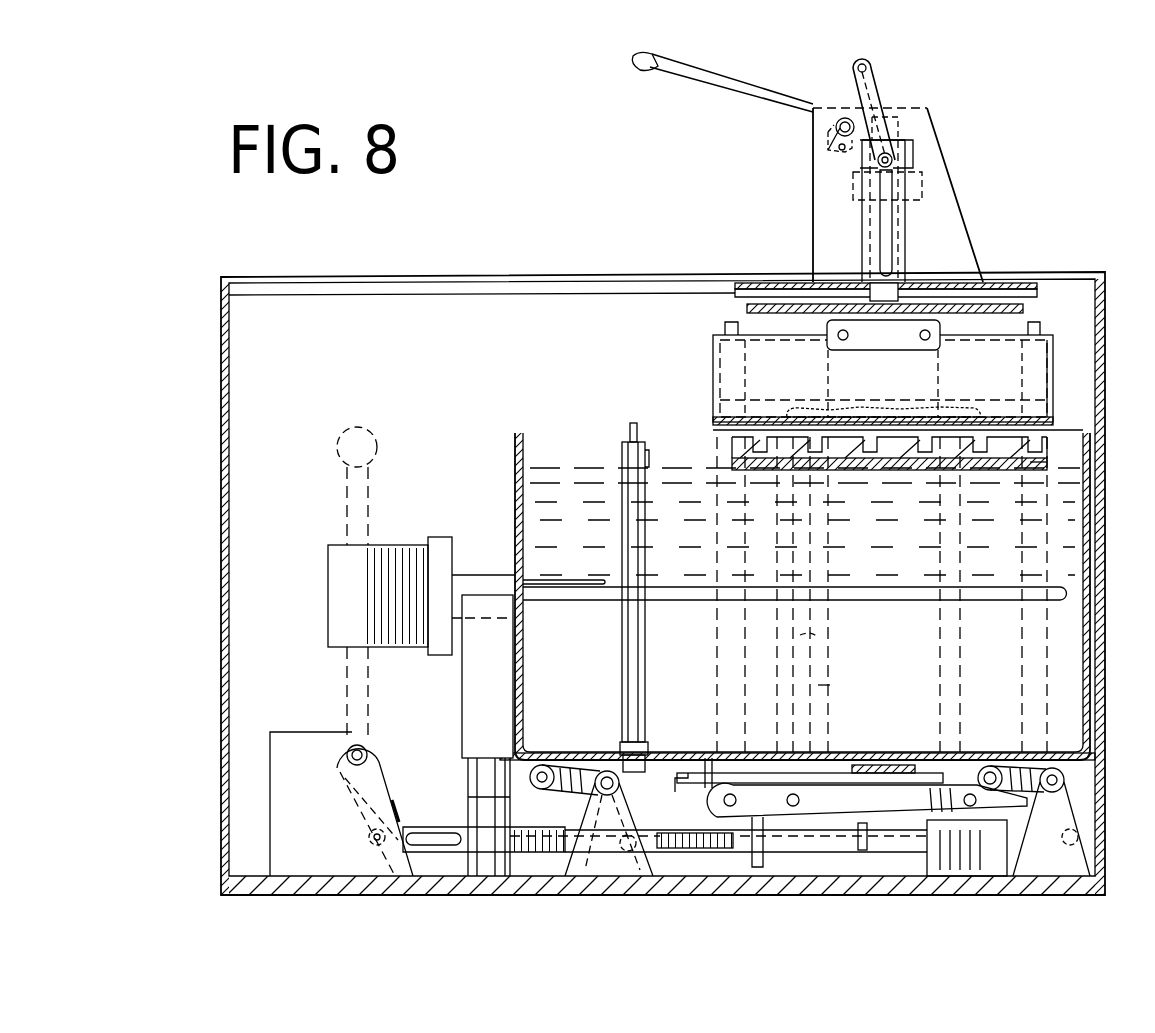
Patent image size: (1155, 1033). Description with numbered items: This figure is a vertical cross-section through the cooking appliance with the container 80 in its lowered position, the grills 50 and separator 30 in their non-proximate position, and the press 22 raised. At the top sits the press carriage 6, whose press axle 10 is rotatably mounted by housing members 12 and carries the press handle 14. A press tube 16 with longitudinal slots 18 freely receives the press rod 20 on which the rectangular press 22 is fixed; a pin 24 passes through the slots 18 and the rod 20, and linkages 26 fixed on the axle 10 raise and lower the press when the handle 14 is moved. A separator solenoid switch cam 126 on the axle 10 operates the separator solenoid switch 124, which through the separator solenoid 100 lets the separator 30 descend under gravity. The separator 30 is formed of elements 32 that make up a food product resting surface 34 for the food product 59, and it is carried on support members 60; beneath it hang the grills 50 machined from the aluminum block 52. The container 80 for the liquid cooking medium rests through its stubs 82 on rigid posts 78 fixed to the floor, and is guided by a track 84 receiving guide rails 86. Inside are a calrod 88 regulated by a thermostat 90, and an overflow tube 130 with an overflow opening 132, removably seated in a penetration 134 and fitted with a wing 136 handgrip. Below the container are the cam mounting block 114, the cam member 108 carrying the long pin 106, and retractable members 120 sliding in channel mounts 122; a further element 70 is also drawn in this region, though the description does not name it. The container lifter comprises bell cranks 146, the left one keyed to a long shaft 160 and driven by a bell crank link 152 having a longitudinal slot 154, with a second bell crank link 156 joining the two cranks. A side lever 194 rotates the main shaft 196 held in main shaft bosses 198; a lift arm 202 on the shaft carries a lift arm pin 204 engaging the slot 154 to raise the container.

The press carriage 6 is at (1092, 201).
The press axle 10 is at (838, 118).
The housing members 12 is at (936, 271).
The press handle 14 is at (746, 88).
The press tube 16 is at (904, 243).
The longitudinal slots 18 is at (880, 250).
The press rod 20 is at (893, 125).
The press 22 is at (1020, 308).
The pin 24 is at (893, 162).
The linkages 26 is at (882, 78).
The separator 30 is at (700, 348).
The elements 32 is at (1010, 415).
The food product resting surface 34 is at (718, 418).
The heat conductive grills 50 is at (1038, 452).
The block 52 is at (1042, 462).
The food product 59 is at (810, 410).
The support members 60 is at (722, 650).
The link bar 70 is at (855, 802).
The rigid posts 78 is at (510, 866).
The container 80 is at (515, 470).
The stubs 82 is at (480, 778).
The track 84 is at (822, 686).
The guide rails 86 is at (810, 636).
The calrod 88 is at (915, 600).
The thermostat 90 is at (598, 580).
The separator solenoid 100 is at (930, 860).
The long pin 106 is at (764, 866).
The cam member 108 is at (675, 782).
The cam mounting block 114 is at (706, 770).
The retractable member 120 is at (895, 765).
The channel mount 122 is at (935, 765).
The separator solenoid switch 124 is at (955, 180).
The separator solenoid switch cam 126 is at (828, 140).
The overflow tube 130 is at (626, 632).
The overflow opening 132 is at (651, 458).
The penetration 134 is at (615, 750).
The wing 136 is at (630, 432).
The bell cranks 146 is at (575, 780).
The bell crank link 152 is at (565, 832).
The longitudinal slot 154 is at (420, 830).
The second bell crank link 156 is at (735, 845).
The long shaft 160 is at (634, 812).
The side lever 194 is at (350, 496).
The main shaft 196 is at (352, 744).
The main shaft bosses 198 is at (290, 768).
The lift arm 202 is at (368, 802).
The lift arm pin 204 is at (370, 845).